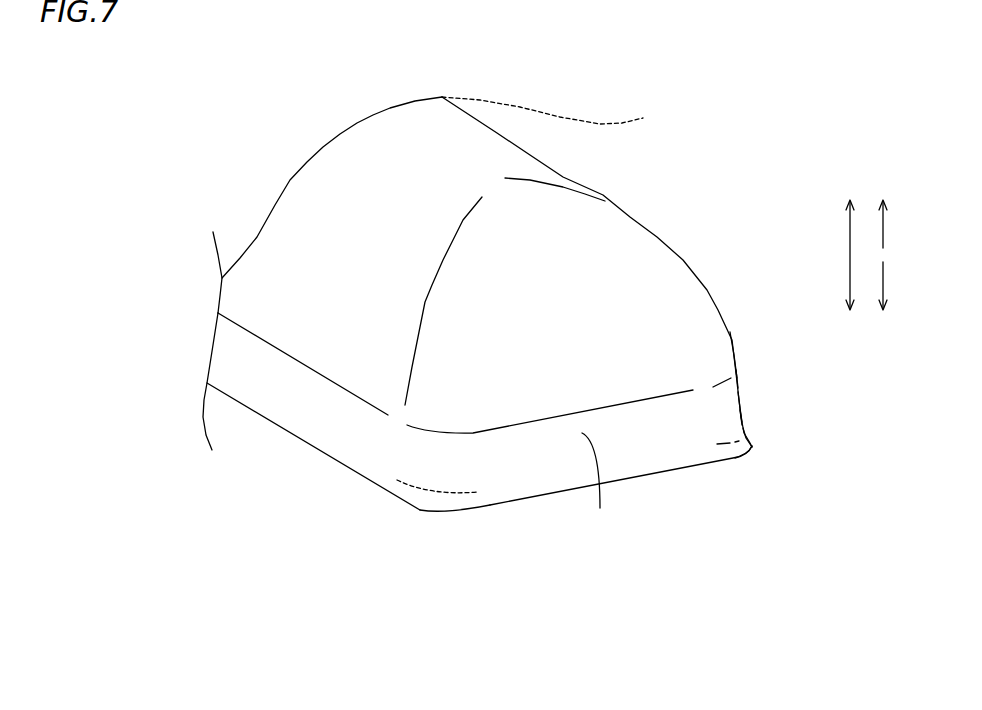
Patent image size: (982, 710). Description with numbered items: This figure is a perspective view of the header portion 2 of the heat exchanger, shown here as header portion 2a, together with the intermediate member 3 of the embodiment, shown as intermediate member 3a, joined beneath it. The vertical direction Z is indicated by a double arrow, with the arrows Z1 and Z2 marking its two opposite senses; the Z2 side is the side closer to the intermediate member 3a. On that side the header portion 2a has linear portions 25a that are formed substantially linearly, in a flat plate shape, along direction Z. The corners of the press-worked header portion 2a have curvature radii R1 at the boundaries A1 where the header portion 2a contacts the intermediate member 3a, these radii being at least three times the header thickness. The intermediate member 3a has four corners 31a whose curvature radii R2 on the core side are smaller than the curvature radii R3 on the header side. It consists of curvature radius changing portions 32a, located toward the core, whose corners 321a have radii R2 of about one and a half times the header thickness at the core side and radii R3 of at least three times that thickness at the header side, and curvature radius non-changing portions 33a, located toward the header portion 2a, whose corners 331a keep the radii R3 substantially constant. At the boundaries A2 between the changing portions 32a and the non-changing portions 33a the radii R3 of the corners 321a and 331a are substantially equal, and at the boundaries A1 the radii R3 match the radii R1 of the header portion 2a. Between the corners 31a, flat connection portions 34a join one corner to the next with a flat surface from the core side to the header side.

The upper body (dome portion) 2 is at (497, 272).
The header portion 2a is at (670, 262).
The lower body 3 is at (477, 411).
The intermediate member 3a is at (381, 450).
The linear portions 25a is at (738, 362).
The corners 31a is at (434, 478).
The curvature radius changing portions 32a is at (809, 440).
The corners of the curvature radius changing portions 321a is at (752, 446).
The curvature radius non-changing portions 33a is at (806, 407).
The corners of the curvature radius non-changing portions 331a is at (737, 407).
The connection portions 34a is at (594, 484).
The boundaries A1 is at (742, 378).
The boundaries A2 is at (745, 440).
The curvature radii R1 is at (732, 373).
The curvature radii R2 is at (740, 450).
The curvature radii R3 is at (733, 417).
The direction Z is at (844, 255).
The Z1 direction Z1 is at (872, 224).
The Z2 direction Z2 is at (872, 286).